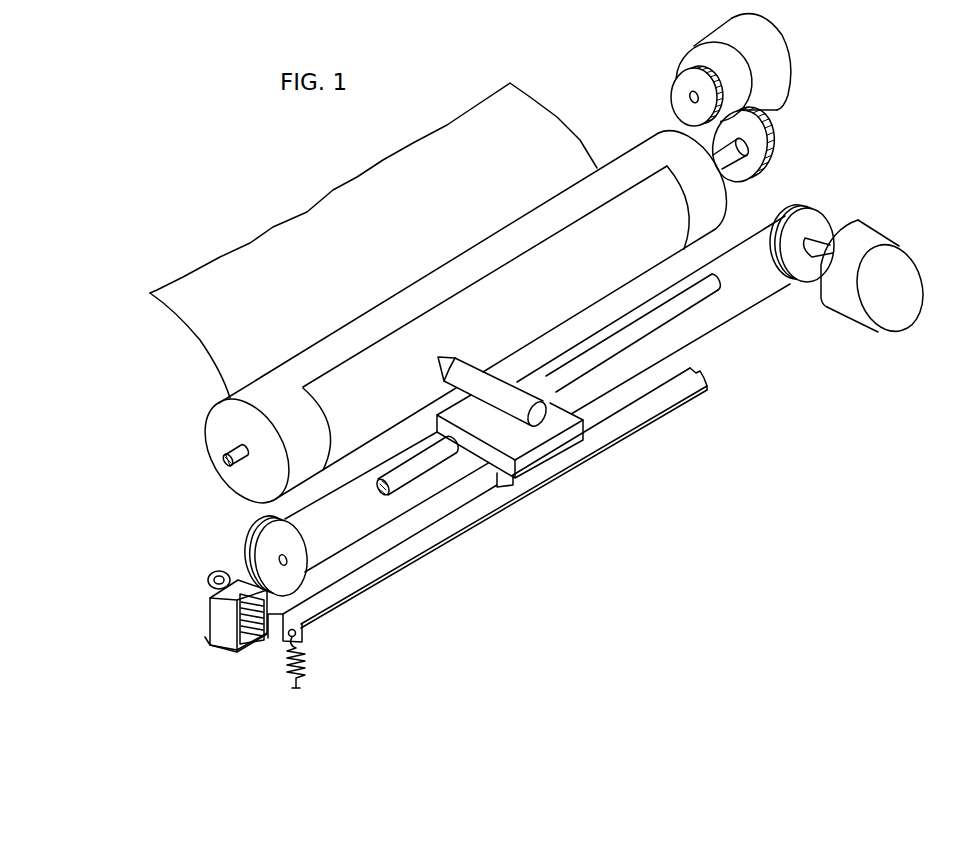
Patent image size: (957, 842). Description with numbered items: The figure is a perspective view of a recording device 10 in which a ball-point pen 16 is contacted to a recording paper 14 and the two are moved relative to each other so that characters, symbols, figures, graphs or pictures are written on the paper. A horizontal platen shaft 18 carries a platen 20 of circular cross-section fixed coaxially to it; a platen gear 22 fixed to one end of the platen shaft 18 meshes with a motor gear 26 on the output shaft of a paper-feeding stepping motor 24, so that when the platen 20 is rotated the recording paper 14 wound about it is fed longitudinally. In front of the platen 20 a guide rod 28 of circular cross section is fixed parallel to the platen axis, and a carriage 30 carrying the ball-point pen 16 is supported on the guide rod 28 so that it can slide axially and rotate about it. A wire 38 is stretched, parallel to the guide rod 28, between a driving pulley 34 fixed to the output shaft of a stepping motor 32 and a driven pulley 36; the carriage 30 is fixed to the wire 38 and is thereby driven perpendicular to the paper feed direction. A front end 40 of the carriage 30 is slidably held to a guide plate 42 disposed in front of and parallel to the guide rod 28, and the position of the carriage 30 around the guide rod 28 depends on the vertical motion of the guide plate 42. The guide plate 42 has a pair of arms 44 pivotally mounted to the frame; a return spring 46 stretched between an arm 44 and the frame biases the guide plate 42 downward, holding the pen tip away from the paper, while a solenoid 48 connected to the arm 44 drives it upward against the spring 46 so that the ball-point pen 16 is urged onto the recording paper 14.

The recording device 10 is at (740, 446).
The recording paper 14 is at (341, 208).
The ball-point pen 16 is at (547, 421).
The platen shaft 18 is at (228, 450).
The platen 20 is at (217, 425).
The platen gear 22 is at (773, 144).
The paper-feeding stepping motor 24 is at (785, 78).
The motor gear 26 is at (672, 87).
The guide rod 28 is at (398, 478).
The carriage 30 is at (527, 447).
The stepping motor 32 is at (840, 308).
The driving pulley 34 is at (823, 223).
The driven pulley 36 is at (253, 538).
The wire 38 is at (742, 317).
The front end 40 is at (510, 486).
The guide plate 42 is at (445, 536).
The arm 44 is at (277, 628).
The return spring 46 is at (308, 667).
The solenoid 48 is at (250, 638).